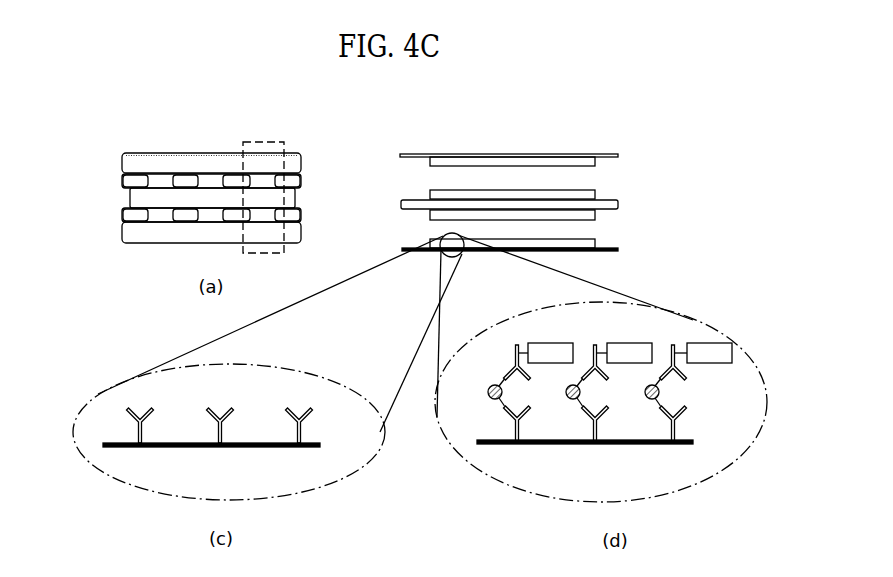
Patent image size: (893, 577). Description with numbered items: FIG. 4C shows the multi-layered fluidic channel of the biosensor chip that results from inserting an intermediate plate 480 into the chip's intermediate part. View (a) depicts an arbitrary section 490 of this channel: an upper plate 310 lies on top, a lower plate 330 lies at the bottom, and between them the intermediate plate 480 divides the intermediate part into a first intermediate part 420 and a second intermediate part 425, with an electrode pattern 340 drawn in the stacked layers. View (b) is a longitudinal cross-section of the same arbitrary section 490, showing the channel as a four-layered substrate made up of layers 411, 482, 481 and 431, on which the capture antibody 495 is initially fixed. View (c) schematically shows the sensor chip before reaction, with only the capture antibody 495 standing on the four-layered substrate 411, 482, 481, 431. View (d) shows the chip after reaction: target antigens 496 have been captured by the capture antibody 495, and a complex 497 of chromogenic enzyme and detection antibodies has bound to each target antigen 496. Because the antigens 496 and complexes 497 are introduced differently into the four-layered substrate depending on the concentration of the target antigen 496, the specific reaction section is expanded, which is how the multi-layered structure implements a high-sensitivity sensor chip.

The upper plate 310 is at (302, 160).
The lower substrate 330 is at (301, 233).
The electrode 340 is at (158, 178).
The first intermediate part 420 is at (300, 215).
The second intermediate part 425 is at (300, 181).
The intermediate plate 480 is at (147, 197).
The arbitrary section 490 is at (258, 142).
The substrate layer 411 is at (618, 160).
The substrate layer 482 is at (618, 194).
The substrate layer 481 is at (618, 216).
The substrate layer 431 is at (618, 243).
The capture antibody 495 is at (138, 432).
The target antigen 496 is at (489, 397).
The complex of chromogenic enzyme (HRP)/detection antibodies 497 is at (515, 357).